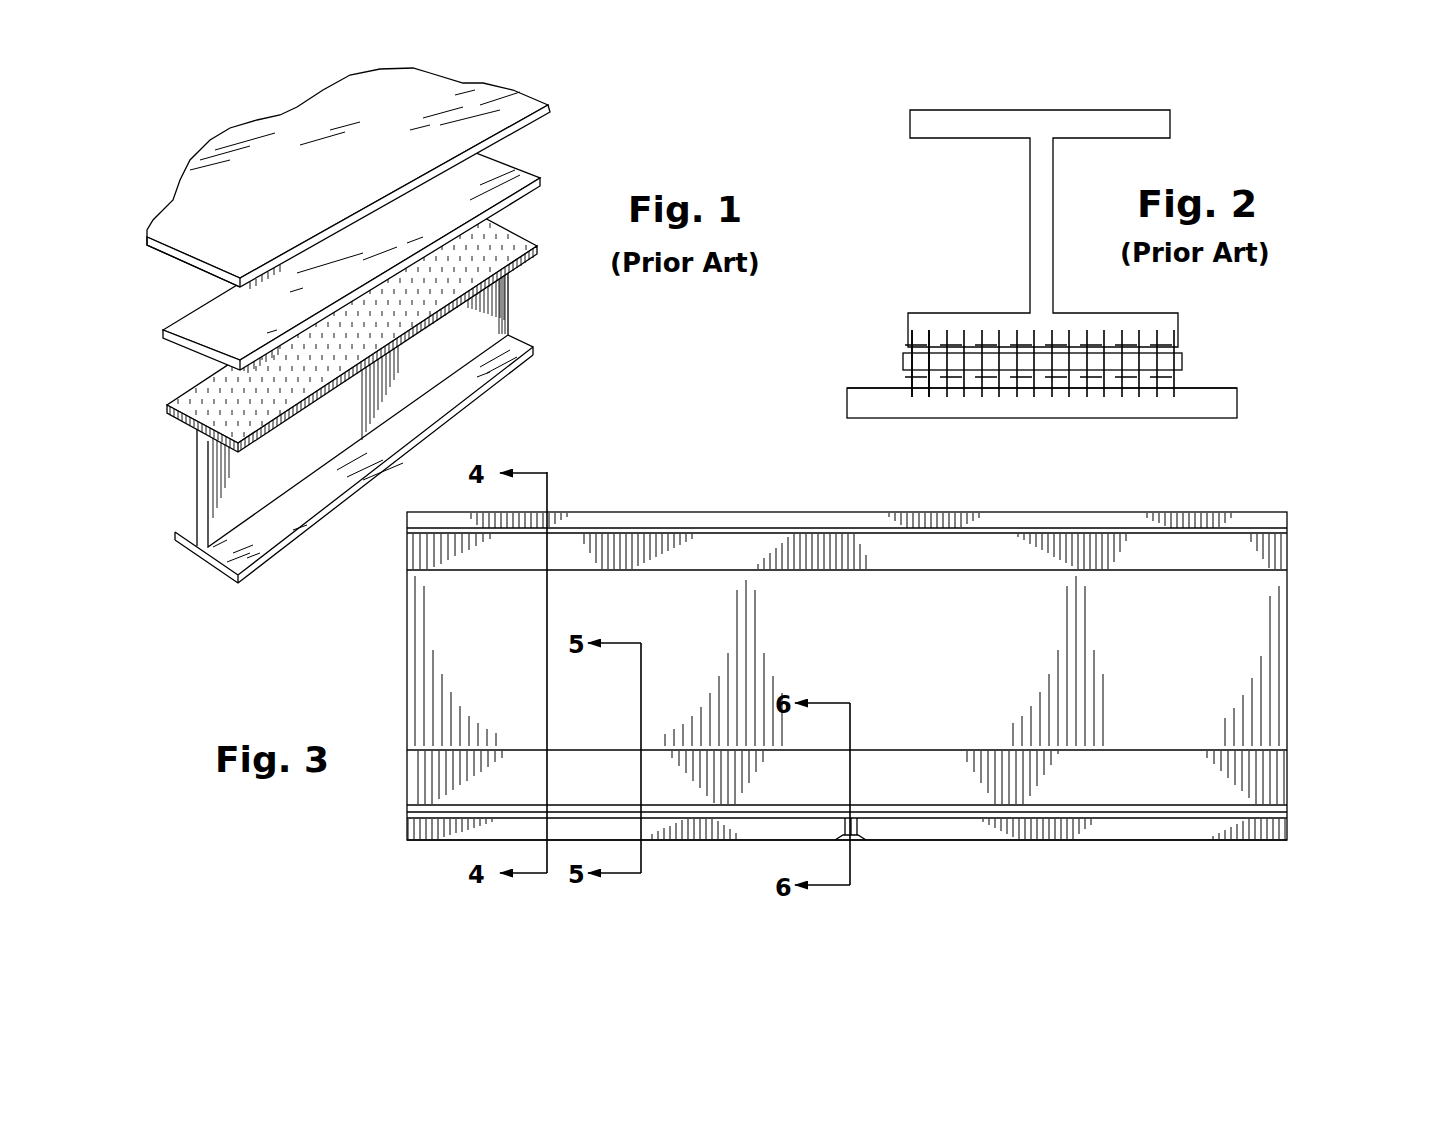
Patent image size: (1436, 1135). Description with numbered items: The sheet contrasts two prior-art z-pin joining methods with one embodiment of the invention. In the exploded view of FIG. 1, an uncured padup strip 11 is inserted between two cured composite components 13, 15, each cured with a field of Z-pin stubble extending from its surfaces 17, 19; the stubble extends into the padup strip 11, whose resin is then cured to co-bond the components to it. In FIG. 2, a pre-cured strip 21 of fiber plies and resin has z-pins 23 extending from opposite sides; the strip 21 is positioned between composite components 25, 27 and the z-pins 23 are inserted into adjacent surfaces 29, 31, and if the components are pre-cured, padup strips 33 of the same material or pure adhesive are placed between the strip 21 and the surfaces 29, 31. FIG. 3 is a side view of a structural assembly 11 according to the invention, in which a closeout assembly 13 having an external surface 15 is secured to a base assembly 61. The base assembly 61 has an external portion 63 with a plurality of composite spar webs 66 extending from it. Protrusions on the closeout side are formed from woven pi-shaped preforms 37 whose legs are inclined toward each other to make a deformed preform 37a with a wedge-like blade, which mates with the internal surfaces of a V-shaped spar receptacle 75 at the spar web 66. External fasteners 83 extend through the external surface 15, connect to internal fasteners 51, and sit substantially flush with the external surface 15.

In FIG. 1, the padup strip / structural assembly 11 is at (495, 168).
In FIG. 3, the padup strip / structural assembly 11 is at (1213, 470).
In FIG. 1, the cured component / closeout assembly 13 is at (513, 90).
In FIG. 3, the cured component / closeout assembly 13 is at (1297, 830).
In FIG. 1, the cured component / external surface 15 is at (492, 323).
In FIG. 3, the cured component / external surface 15 is at (1028, 842).
In FIG. 1, the surface 17 is at (175, 263).
In FIG. 1, the surface 19 is at (493, 248).
In FIG. 2, the pre-cured strip 21 is at (1183, 363).
In FIG. 2, the z-pins 23 is at (1170, 343).
In FIG. 2, the component 25 is at (965, 110).
In FIG. 2, the component 27 is at (863, 407).
In FIG. 2, the surface 29 is at (922, 340).
In FIG. 2, the surface 31 is at (858, 387).
In FIG. 2, the padup strips 33 is at (905, 377).
In FIG. 3, the pi-shaped preform 37 is at (672, 552).
In FIG. 3, the deformed preform 37a is at (730, 820).
In FIG. 3, the internal fasteners 51 is at (865, 818).
In FIG. 3, the base assembly 61 is at (1293, 567).
In FIG. 3, the external portion 63 is at (905, 512).
In FIG. 3, the spar web 66 is at (1253, 668).
In FIG. 3, the spar receptacle 75 is at (1278, 778).
In FIG. 3, the external fasteners 83 is at (862, 842).